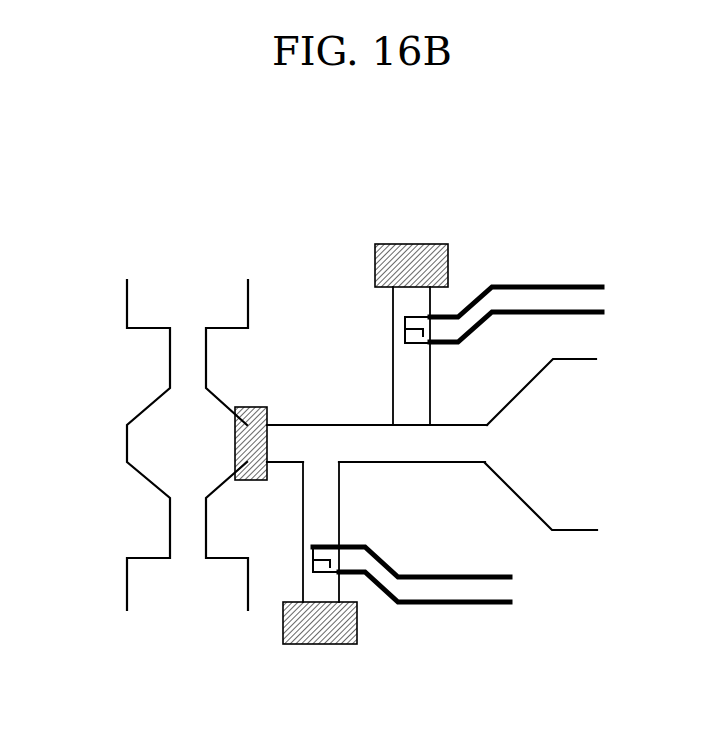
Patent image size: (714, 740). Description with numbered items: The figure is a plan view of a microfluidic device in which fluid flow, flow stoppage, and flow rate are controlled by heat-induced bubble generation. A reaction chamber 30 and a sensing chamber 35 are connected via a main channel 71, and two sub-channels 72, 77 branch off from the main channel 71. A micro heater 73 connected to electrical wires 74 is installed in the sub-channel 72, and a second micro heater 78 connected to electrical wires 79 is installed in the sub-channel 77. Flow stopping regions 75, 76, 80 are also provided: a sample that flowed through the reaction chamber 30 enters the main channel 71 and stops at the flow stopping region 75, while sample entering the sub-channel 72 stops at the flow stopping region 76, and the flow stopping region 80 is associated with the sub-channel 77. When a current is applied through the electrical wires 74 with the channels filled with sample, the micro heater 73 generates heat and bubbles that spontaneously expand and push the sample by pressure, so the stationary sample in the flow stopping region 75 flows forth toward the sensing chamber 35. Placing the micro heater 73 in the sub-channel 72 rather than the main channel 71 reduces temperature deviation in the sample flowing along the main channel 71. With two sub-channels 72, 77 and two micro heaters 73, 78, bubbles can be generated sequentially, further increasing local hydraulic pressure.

The reaction chamber 30 is at (545, 445).
The sensing chamber 35 is at (135, 443).
The main channel 71 is at (321, 438).
The sub-channel 72 is at (325, 512).
The micro heater 73 is at (313, 547).
The electrical wires 74 is at (448, 607).
The flow stopping region 75 is at (252, 405).
The flow stopping region 76 is at (320, 647).
The sub-channel 77 is at (418, 377).
The micro heater 78 is at (406, 335).
The electrical wires 79 is at (541, 285).
The flow stopping region 80 is at (411, 243).